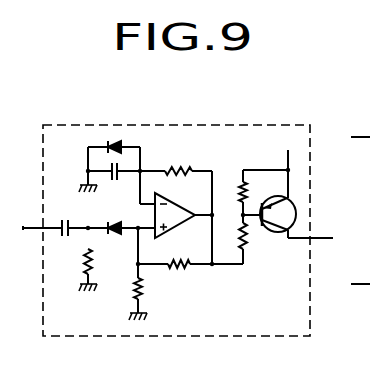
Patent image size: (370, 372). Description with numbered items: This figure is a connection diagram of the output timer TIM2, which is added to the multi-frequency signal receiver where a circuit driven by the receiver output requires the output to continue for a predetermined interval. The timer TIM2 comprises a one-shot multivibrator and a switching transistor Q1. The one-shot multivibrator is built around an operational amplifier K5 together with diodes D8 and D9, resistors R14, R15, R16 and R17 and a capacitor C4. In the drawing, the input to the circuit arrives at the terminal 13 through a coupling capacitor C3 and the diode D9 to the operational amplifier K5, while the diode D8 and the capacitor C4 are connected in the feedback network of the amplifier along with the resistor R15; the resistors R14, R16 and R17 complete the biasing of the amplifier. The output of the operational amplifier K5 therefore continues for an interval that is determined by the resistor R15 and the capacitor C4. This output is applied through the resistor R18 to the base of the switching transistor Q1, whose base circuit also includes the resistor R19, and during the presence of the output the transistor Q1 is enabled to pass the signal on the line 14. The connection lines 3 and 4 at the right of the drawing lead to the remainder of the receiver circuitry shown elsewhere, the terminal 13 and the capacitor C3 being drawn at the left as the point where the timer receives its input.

The input terminal 13 is at (23, 228).
The line 14 is at (325, 237).
The connection line 3 is at (360, 137).
The connection line 4 is at (360, 284).
The coupling capacitor C3 is at (66, 220).
The capacitor C4 is at (110, 165).
The diode D8 is at (113, 143).
The diode D9 is at (113, 223).
The resistor R14 is at (100, 264).
The resistor R15 is at (178, 157).
The resistor R16 is at (183, 268).
The resistor R17 is at (151, 293).
The resistor R18 is at (241, 190).
The resistor R19 is at (247, 238).
The operational amplifier K5 is at (176, 226).
The switching transistor Q1 is at (277, 202).
The output timer TIM2 is at (267, 124).